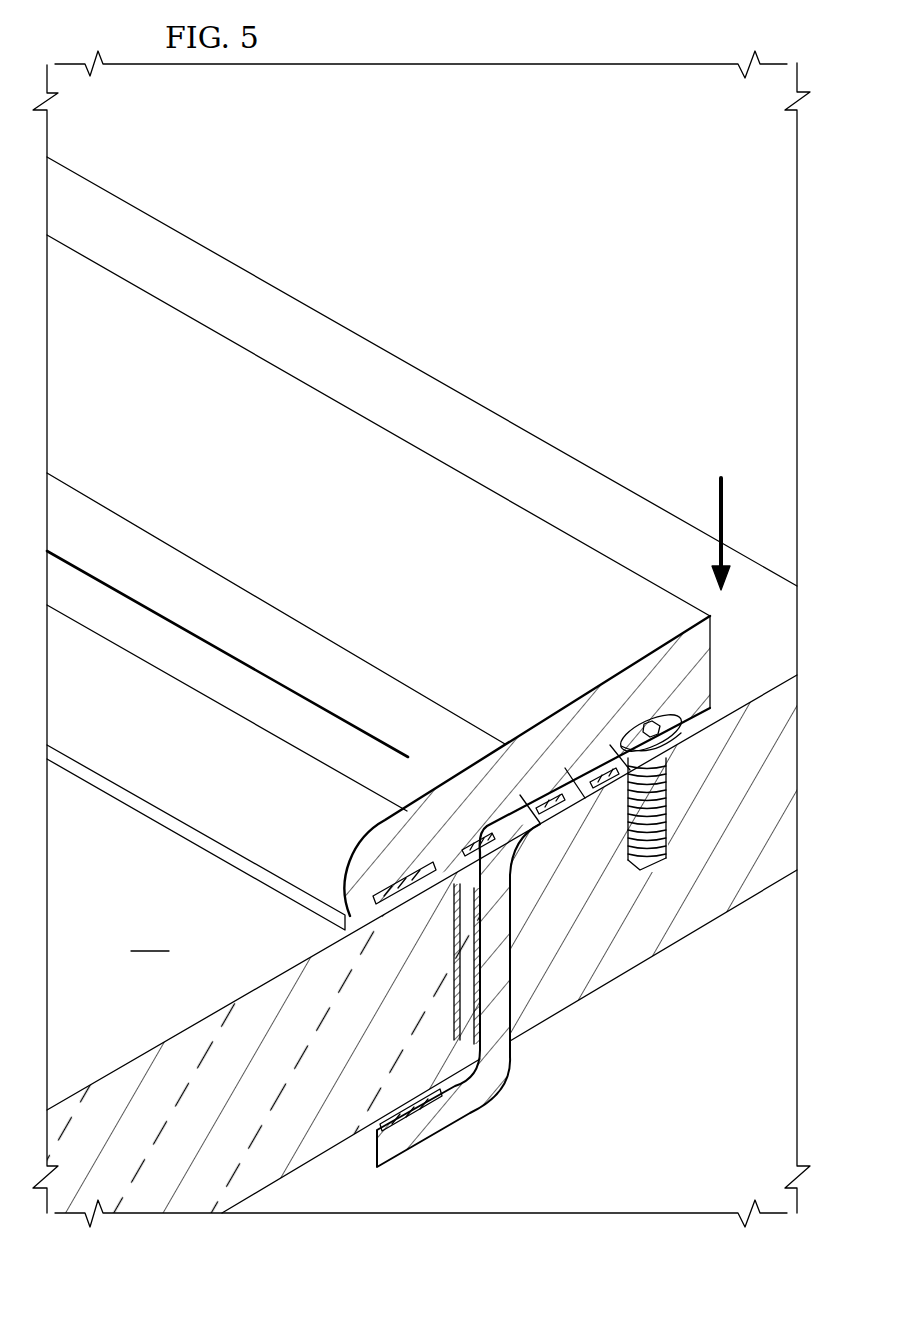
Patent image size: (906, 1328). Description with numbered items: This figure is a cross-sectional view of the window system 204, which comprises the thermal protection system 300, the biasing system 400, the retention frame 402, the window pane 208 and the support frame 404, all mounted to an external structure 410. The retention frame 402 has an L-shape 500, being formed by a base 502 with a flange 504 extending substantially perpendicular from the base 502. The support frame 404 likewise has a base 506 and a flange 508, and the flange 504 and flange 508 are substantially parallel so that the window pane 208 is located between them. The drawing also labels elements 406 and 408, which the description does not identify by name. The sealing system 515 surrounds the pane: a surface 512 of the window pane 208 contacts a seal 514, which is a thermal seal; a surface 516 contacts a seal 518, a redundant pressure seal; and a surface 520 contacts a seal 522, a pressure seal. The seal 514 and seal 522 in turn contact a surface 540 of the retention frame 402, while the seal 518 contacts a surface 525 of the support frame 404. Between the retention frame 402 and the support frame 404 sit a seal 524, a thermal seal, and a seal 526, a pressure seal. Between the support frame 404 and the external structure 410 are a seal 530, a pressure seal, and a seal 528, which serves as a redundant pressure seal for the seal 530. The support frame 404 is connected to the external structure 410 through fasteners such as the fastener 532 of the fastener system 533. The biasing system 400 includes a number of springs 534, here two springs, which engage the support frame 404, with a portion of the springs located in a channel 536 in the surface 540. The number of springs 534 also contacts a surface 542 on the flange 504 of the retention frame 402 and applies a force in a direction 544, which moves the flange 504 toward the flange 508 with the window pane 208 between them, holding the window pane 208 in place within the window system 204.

The window system 204 is at (606, 425).
The window pane 208 is at (152, 938).
The thermal protection system 300 is at (372, 434).
The biasing system 400 is at (534, 902).
The retention frame 402 is at (430, 802).
The support frame 404 is at (460, 1122).
The top flange 406 is at (667, 720).
The web portion 408 is at (492, 1002).
The external structure 410 is at (728, 898).
The L-shape 500 is at (365, 852).
The base 502 is at (490, 1068).
The flange 504 is at (468, 912).
The base 506 is at (513, 1040).
The flange 508 is at (432, 1134).
The surface 512 is at (250, 875).
The seal 514 is at (402, 850).
The sealing system 515 is at (374, 882).
The surface 516 is at (348, 1162).
The seal 518 is at (395, 1134).
The surface 520 is at (458, 1088).
The seal 522 is at (452, 990).
The seal 524 is at (482, 930).
The surface 525 is at (500, 1098).
The seal 526 is at (482, 984).
The seal 528 is at (546, 816).
The seal 530 is at (603, 794).
The fastener 532 is at (668, 814).
The fastener system 533 is at (684, 772).
The number of springs 534 is at (488, 812).
The channel 536 is at (512, 802).
The surface 540 is at (500, 880).
The surface 542 is at (462, 838).
The direction 544 is at (723, 526).